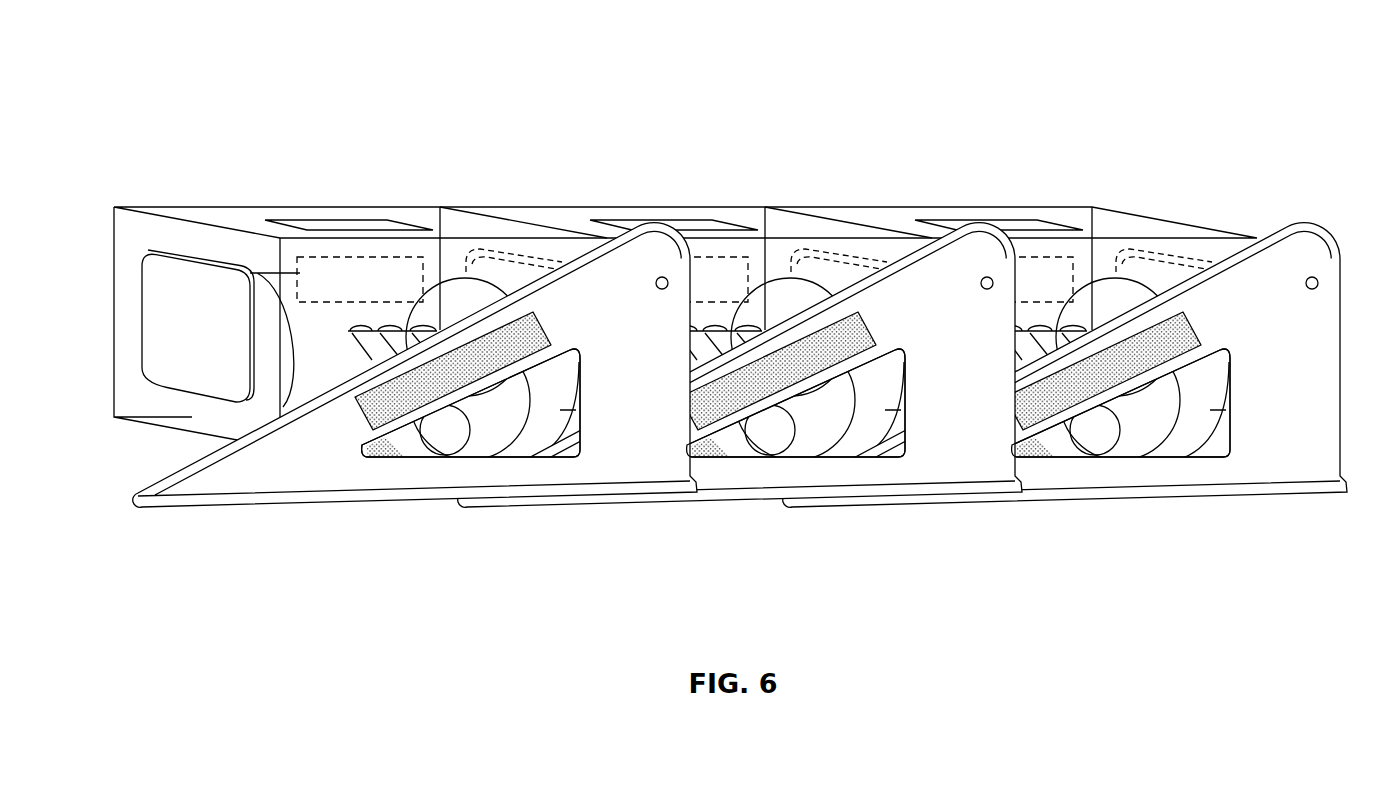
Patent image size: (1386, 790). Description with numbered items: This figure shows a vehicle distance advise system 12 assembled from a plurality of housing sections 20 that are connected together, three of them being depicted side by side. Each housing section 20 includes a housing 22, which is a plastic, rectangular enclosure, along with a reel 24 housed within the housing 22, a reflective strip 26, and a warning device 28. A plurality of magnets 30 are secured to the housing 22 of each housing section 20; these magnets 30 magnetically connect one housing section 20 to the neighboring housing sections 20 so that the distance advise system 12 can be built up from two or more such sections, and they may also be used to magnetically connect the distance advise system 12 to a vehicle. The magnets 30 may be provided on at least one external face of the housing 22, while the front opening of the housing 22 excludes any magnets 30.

The distance advise system 12 is at (730, 321).
The housing section 20 is at (311, 201).
The housing 22 is at (195, 217).
The reel 24 is at (1106, 295).
The reflective strip 26 is at (1054, 457).
The warning device 28 is at (1089, 482).
The magnets 30 is at (353, 227).